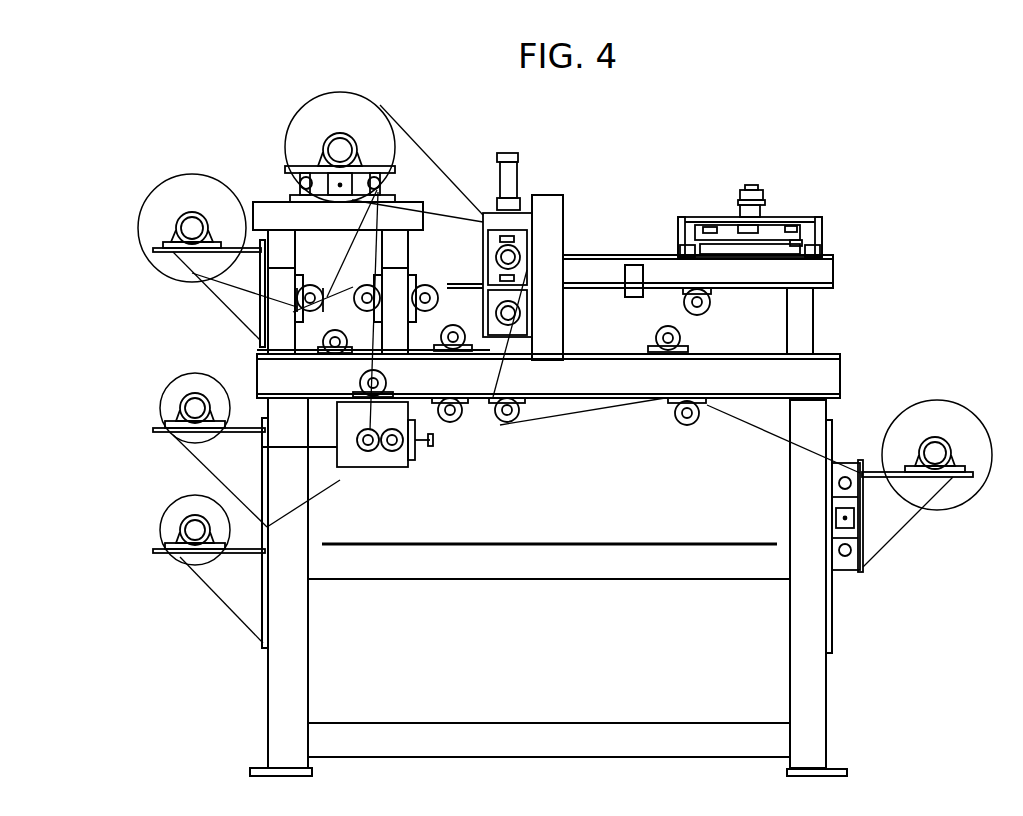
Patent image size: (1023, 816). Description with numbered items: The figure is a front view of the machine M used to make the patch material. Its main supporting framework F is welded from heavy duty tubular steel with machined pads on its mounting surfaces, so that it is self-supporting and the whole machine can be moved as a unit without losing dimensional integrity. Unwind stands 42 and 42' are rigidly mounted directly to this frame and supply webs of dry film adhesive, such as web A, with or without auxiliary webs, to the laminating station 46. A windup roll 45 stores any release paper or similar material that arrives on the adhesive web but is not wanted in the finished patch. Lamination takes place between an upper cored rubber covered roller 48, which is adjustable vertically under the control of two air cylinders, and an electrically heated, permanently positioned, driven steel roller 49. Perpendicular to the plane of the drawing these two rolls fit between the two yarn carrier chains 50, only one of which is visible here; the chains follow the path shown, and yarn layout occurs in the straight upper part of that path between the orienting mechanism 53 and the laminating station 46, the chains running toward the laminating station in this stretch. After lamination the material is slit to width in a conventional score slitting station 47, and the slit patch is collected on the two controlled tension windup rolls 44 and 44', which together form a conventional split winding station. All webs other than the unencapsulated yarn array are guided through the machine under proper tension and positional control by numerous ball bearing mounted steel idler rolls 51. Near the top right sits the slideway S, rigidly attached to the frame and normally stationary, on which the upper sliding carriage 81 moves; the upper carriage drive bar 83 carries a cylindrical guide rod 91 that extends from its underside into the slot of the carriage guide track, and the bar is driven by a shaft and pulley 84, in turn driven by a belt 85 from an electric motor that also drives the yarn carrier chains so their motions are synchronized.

The unwind stand 42 is at (322, 137).
The unwind stand 42' is at (912, 445).
The controlled tension windup roll 44 is at (200, 518).
The controlled tension windup roll 44' is at (198, 390).
The windup roll 45 is at (198, 188).
The laminating station 46 is at (513, 157).
The score slitting station 47 is at (390, 460).
The upper cored rubber covered roller 48 is at (483, 254).
The electrically heated driven steel roller 49 is at (530, 300).
The yarn carrier chain 50 is at (430, 337).
The ball bearing mounted steel idler roll 51 is at (520, 412).
The mechanical means for yarn orientation 53 is at (772, 204).
The upper sliding carriage 81 is at (783, 253).
The upper carriage drive bar 83 is at (717, 233).
The shaft and pulley 84 is at (755, 186).
The belt 85 is at (738, 195).
The cylindrical guide rod 91 is at (800, 228).
The web of dry film adhesive A is at (452, 167).
The slideway S is at (828, 234).
The machine M is at (226, 663).
The main supporting framework F is at (832, 672).